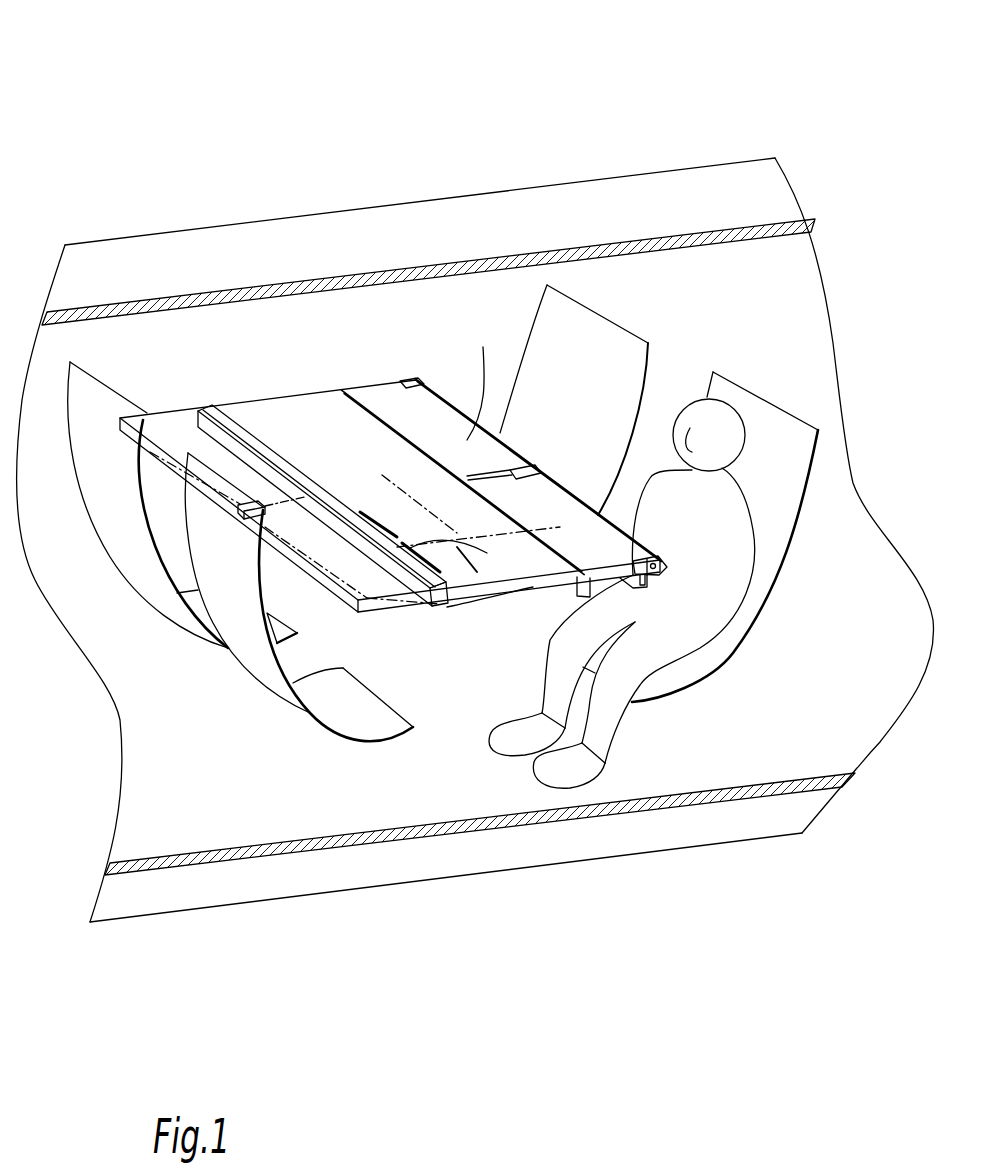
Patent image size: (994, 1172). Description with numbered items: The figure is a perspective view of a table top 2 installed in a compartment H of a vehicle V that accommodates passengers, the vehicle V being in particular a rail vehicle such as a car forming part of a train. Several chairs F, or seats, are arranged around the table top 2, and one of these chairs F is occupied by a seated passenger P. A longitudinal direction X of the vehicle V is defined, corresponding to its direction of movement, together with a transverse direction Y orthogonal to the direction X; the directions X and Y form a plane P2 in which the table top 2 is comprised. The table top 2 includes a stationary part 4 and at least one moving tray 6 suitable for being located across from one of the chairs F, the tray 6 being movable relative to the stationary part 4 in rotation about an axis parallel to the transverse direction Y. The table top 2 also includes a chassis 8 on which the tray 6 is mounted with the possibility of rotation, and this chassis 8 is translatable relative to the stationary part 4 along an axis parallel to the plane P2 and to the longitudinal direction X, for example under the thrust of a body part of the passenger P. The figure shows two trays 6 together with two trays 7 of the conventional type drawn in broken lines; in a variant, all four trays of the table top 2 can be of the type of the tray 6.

The vehicle V is at (480, 170).
The compartment H is at (730, 325).
The chairs F is at (588, 347).
The passenger P is at (622, 593).
The table top 2 is at (422, 368).
The stationary part 4 is at (427, 483).
The moving tray 6 is at (550, 503).
The trays of the conventional type 7 is at (313, 543).
The chassis 8 is at (660, 583).
The longitudinal direction X is at (485, 532).
The transverse direction Y is at (413, 491).
The plane P2 is at (448, 557).